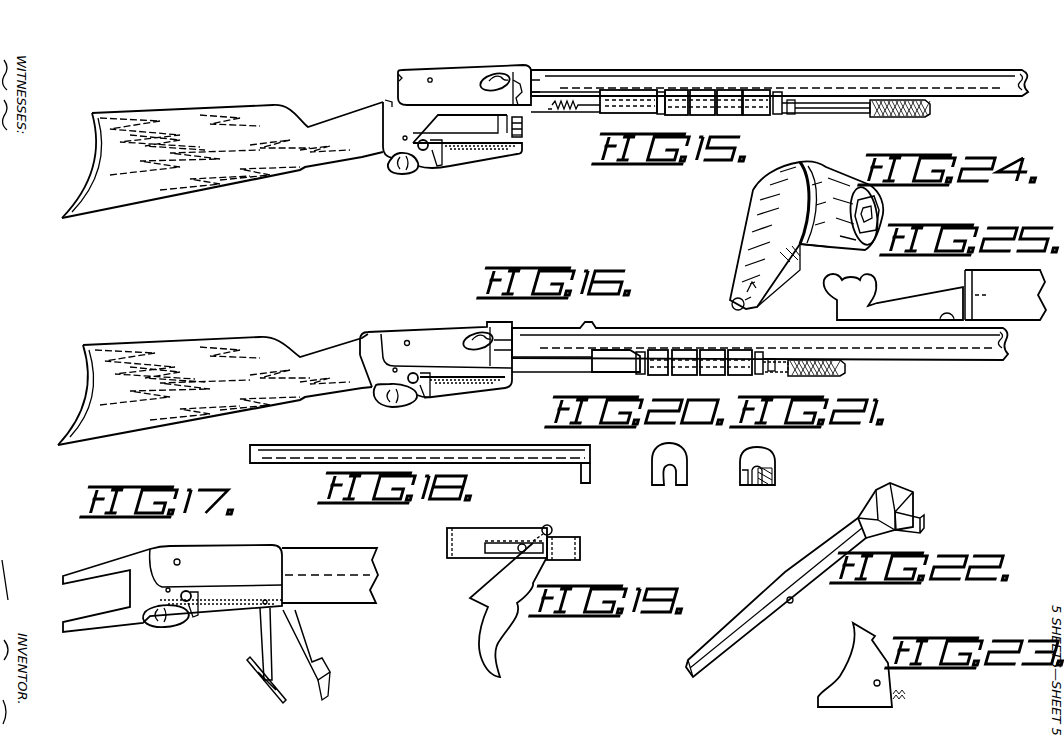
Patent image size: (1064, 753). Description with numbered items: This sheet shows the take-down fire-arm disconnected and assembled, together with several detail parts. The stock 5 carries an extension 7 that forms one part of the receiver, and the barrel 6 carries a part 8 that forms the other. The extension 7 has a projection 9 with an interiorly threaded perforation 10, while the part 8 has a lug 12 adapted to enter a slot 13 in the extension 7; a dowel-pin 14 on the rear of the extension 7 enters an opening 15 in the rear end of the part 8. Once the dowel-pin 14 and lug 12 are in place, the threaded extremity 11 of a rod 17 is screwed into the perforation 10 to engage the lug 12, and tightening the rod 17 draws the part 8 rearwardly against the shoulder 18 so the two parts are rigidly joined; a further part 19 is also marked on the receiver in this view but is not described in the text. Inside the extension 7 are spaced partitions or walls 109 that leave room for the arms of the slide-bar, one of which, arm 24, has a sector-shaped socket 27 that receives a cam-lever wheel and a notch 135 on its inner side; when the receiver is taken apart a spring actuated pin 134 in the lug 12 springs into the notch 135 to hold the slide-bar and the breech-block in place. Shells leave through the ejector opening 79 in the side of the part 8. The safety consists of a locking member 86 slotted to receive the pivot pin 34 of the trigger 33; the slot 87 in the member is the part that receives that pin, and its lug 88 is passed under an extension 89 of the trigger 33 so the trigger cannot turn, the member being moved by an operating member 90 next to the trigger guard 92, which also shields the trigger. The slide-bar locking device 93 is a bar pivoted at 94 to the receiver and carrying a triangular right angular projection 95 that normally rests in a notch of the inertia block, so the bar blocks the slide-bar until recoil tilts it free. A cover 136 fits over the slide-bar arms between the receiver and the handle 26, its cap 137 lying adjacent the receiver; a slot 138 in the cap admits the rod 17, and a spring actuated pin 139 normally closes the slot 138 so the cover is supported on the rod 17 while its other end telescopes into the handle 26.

In FIG. 15, the stock 5 is at (210, 170).
In FIG. 16, the stock 5 is at (215, 389).
In FIG. 15, the barrel 6 is at (694, 70).
In FIG. 21, the barrel 6 is at (760, 341).
In FIG. 15, the extension of the stock 7 is at (443, 166).
In FIG. 15, the part of the barrel 8 is at (457, 70).
In FIG. 15, the projection 9 is at (523, 136).
In FIG. 15, the interiorly threaded perforation 10 is at (523, 126).
In FIG. 15, the threaded extremity 11 is at (567, 110).
In FIG. 15, the lug 12 is at (533, 76).
In FIG. 15, the slot 13 is at (504, 133).
In FIG. 15, the dowel-pin 14 is at (390, 102).
In FIG. 15, the opening 15 is at (400, 77).
In FIG. 15, the rod 17 is at (801, 115).
In FIG. 20, the rod 17 is at (804, 367).
In FIG. 15, the shoulder 18 is at (380, 128).
In FIG. 15, the extractor 19 is at (517, 85).
In FIG. 25, the arm of the slide-bar 24 is at (1005, 295).
In FIG. 15, the handle 26 is at (762, 115).
In FIG. 20, the handle 26 is at (711, 370).
In FIG. 25, the sector-shaped socket 27 is at (846, 282).
In FIG. 19, the trigger 33 is at (490, 644).
In FIG. 23, the trigger 33 is at (861, 665).
In FIG. 19, the pivot pin 34 is at (521, 553).
In FIG. 15, the ejector opening 79 is at (491, 75).
In FIG. 16, the ejector opening 79 is at (477, 332).
In FIG. 19, the locking member 86 is at (483, 538).
In FIG. 19, the slot 87 is at (486, 548).
In FIG. 19, the lug 88 is at (580, 545).
In FIG. 19, the extension 89 is at (534, 544).
In FIG. 15, the operating member 90 is at (420, 151).
In FIG. 16, the operating member 90 is at (418, 386).
In FIG. 15, the trigger guard 92 is at (411, 178).
In FIG. 16, the trigger guard 92 is at (386, 409).
In FIG. 17, the trigger guard 92 is at (160, 628).
In FIG. 22, the slide-bar locking device 93 is at (746, 622).
In FIG. 22, the pivot 94 is at (791, 603).
In FIG. 22, the triangular right angular projection 95 is at (915, 512).
In FIG. 15, the partitions or walls 109 is at (460, 129).
In FIG. 24, the spring actuated pin 134 is at (734, 300).
In FIG. 25, the notch 135 is at (947, 314).
In FIG. 15, the cover 136 is at (638, 90).
In FIG. 20, the cover 136 is at (576, 361).
In FIG. 18, the cover 136 is at (444, 455).
In FIG. 18, the cap 137 is at (591, 474).
In FIG. 18, the slot 138 is at (742, 487).
In FIG. 18, the spring actuated pin 139 is at (759, 487).